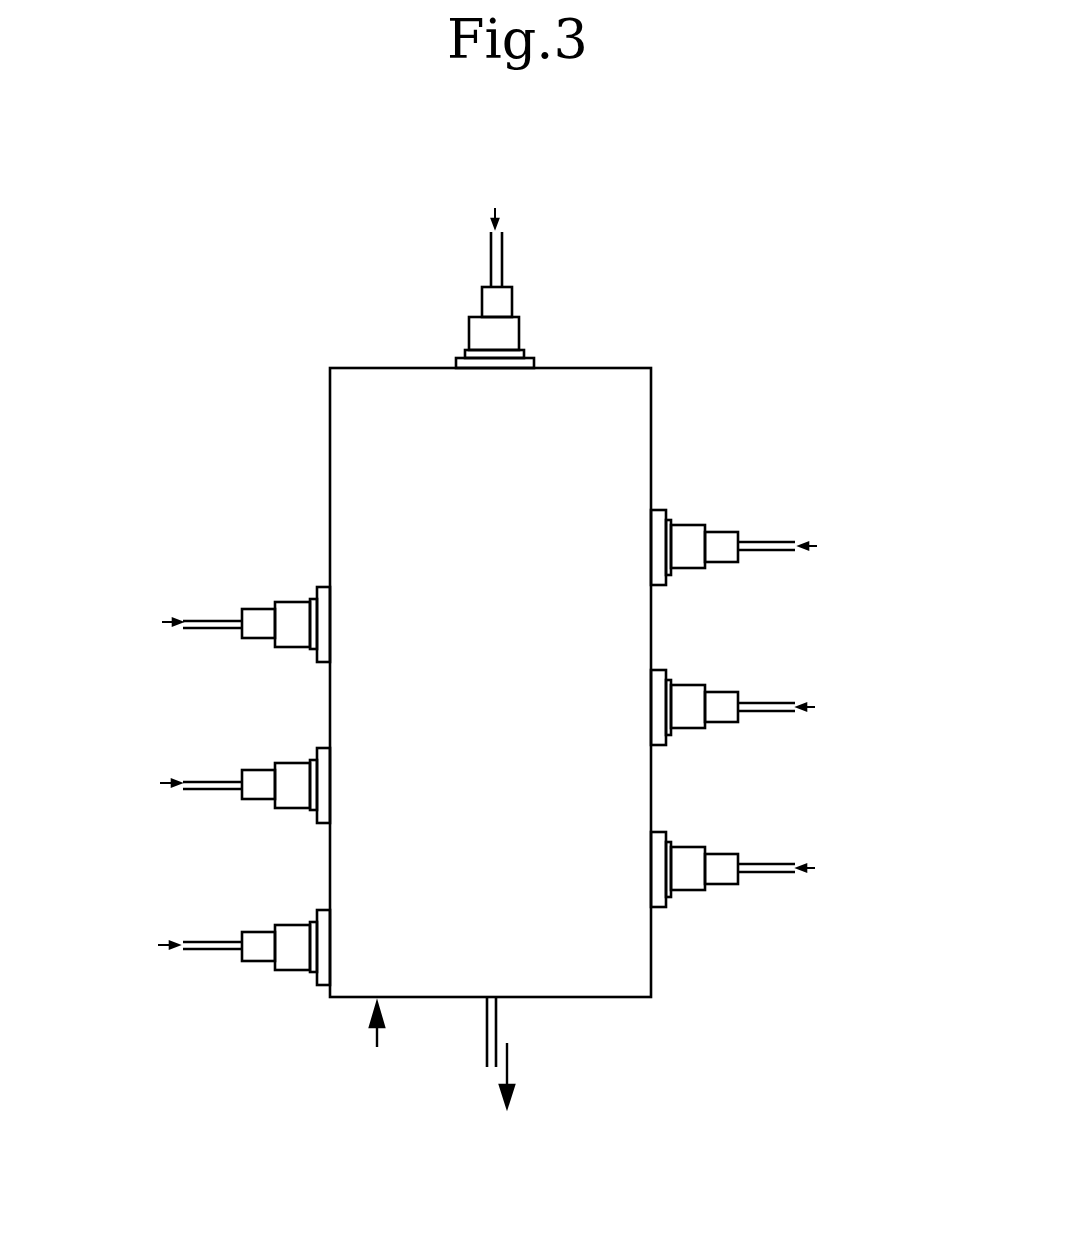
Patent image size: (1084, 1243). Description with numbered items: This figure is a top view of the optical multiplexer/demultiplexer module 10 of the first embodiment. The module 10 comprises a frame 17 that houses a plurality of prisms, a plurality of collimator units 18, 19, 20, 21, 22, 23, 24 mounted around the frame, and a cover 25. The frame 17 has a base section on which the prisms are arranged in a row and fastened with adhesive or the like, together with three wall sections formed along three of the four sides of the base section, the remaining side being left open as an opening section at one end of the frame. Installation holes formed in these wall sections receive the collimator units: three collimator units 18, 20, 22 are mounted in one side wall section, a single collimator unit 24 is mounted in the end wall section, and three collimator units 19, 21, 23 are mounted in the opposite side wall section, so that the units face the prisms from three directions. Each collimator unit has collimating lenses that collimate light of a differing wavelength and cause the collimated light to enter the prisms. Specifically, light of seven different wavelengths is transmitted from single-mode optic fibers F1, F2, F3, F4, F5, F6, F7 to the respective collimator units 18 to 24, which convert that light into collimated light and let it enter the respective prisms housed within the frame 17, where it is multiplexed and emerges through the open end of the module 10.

The optical multiplexer/demultiplexer module 10 is at (638, 340).
The frame 17 is at (331, 418).
The collimator unit 18 is at (255, 960).
The collimator unit 19 is at (695, 892).
The collimator unit 20 is at (270, 798).
The collimator unit 21 is at (695, 730).
The collimator unit 22 is at (268, 637).
The collimator unit 23 is at (690, 573).
The collimator unit 24 is at (530, 334).
The cover 25 is at (637, 973).
The single-mode optic fiber F1 is at (207, 940).
The single-mode optic fiber F2 is at (773, 862).
The single-mode optic fiber F3 is at (202, 780).
The single-mode optic fiber F4 is at (773, 702).
The single-mode optic fiber F5 is at (218, 622).
The single-mode optic fiber F6 is at (767, 543).
The single-mode optic fiber F7 is at (492, 255).